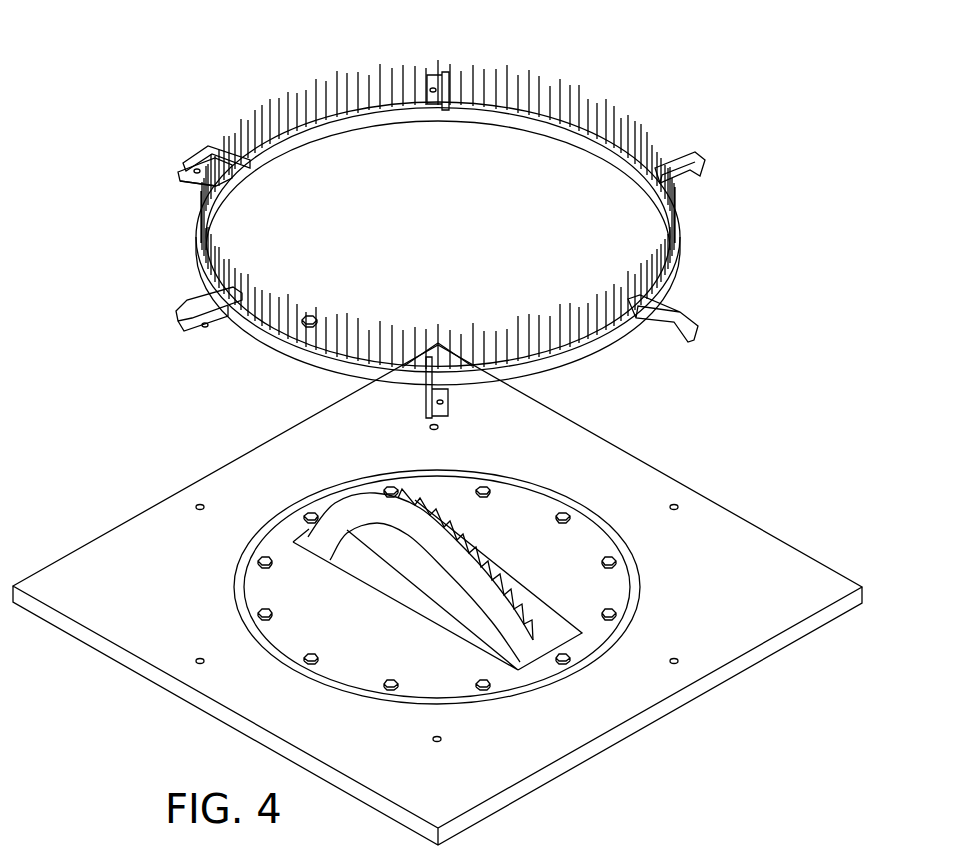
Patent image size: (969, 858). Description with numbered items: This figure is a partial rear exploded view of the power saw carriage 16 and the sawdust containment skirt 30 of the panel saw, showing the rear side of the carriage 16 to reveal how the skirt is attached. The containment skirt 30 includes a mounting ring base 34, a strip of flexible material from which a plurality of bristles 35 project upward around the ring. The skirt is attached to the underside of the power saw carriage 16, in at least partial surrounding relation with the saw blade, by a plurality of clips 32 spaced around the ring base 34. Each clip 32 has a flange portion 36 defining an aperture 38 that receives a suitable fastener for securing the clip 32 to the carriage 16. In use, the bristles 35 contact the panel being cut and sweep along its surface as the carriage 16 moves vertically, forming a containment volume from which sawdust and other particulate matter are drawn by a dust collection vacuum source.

The carriage 16 is at (103, 560).
The containment skirt 30 is at (417, 239).
The clips 32 is at (203, 155).
The mounting ring base 34 is at (293, 355).
The bristles 35 is at (590, 106).
The flange portion 36 is at (200, 168).
The aperture 38 is at (200, 178).